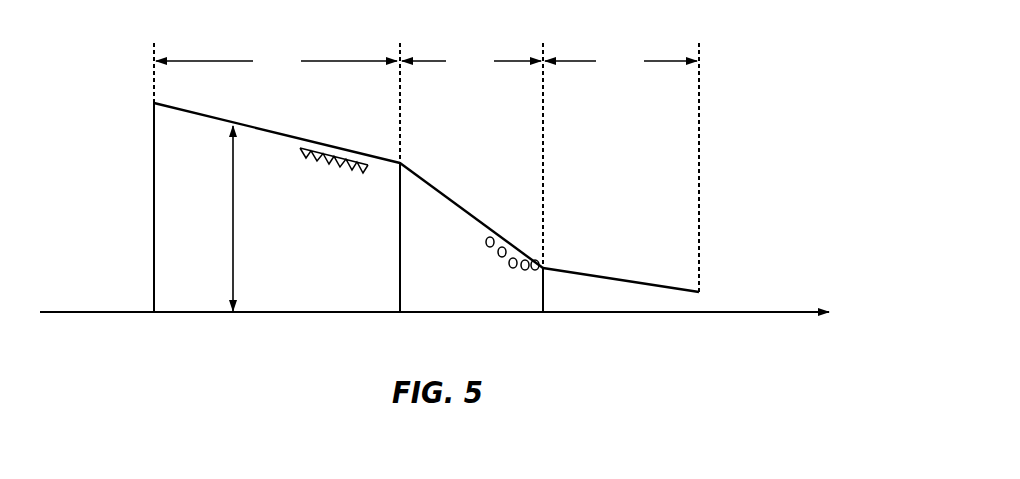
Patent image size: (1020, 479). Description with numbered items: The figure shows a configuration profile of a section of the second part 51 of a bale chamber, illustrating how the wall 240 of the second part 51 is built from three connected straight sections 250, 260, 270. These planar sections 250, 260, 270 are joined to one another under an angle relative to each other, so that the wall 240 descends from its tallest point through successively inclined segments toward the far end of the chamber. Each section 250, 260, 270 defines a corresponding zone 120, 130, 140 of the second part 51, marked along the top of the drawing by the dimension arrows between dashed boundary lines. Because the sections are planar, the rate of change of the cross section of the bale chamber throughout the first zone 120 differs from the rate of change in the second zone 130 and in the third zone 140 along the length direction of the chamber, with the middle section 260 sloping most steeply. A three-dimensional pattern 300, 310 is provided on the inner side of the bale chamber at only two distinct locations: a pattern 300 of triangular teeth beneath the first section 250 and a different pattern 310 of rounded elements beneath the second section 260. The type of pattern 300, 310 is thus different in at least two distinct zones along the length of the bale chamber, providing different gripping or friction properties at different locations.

The second part 51 is at (772, 122).
The zone 120 is at (276, 61).
The zone 130 is at (471, 61).
The zone 140 is at (621, 61).
The wall 240 is at (176, 140).
The section 250 is at (262, 125).
The section 260 is at (440, 188).
The section 270 is at (590, 275).
The 3D pattern 300 is at (326, 178).
The 3D pattern 310 is at (502, 273).